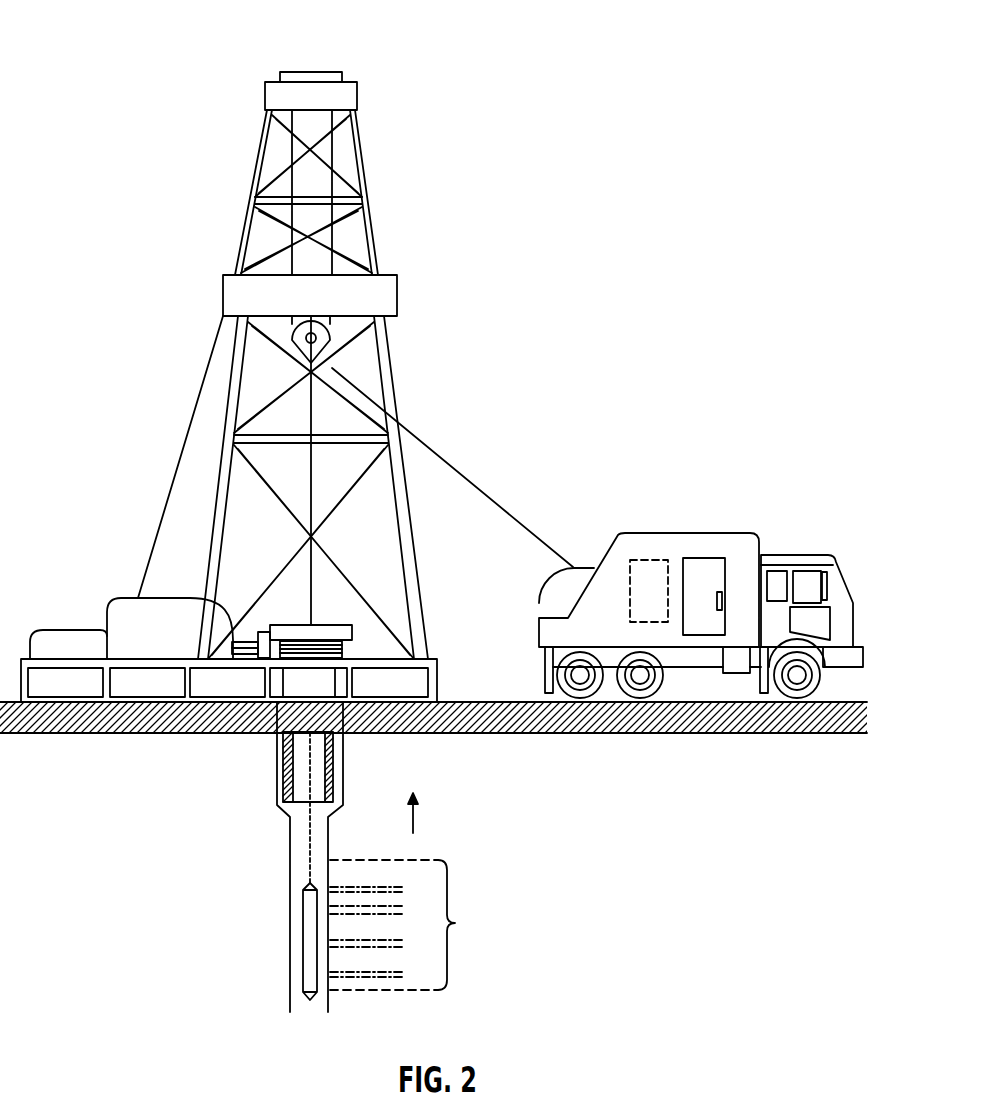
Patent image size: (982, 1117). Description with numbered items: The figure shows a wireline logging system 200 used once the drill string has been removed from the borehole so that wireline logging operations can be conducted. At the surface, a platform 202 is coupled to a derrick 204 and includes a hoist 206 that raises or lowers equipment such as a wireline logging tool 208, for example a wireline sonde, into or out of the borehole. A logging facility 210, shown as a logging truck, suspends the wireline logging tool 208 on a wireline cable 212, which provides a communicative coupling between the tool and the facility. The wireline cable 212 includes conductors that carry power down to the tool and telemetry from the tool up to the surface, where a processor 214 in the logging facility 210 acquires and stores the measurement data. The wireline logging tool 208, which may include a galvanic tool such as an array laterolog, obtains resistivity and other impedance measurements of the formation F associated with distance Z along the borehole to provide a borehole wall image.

The wireline logging system 200 is at (195, 39).
The platform 202 is at (438, 675).
The derrick 204 is at (418, 593).
The hoist 206 is at (333, 342).
The wireline logging tool 208 is at (303, 892).
The logging facility 210 is at (735, 540).
The wireline cable 212 is at (477, 483).
The processor 214 is at (630, 558).